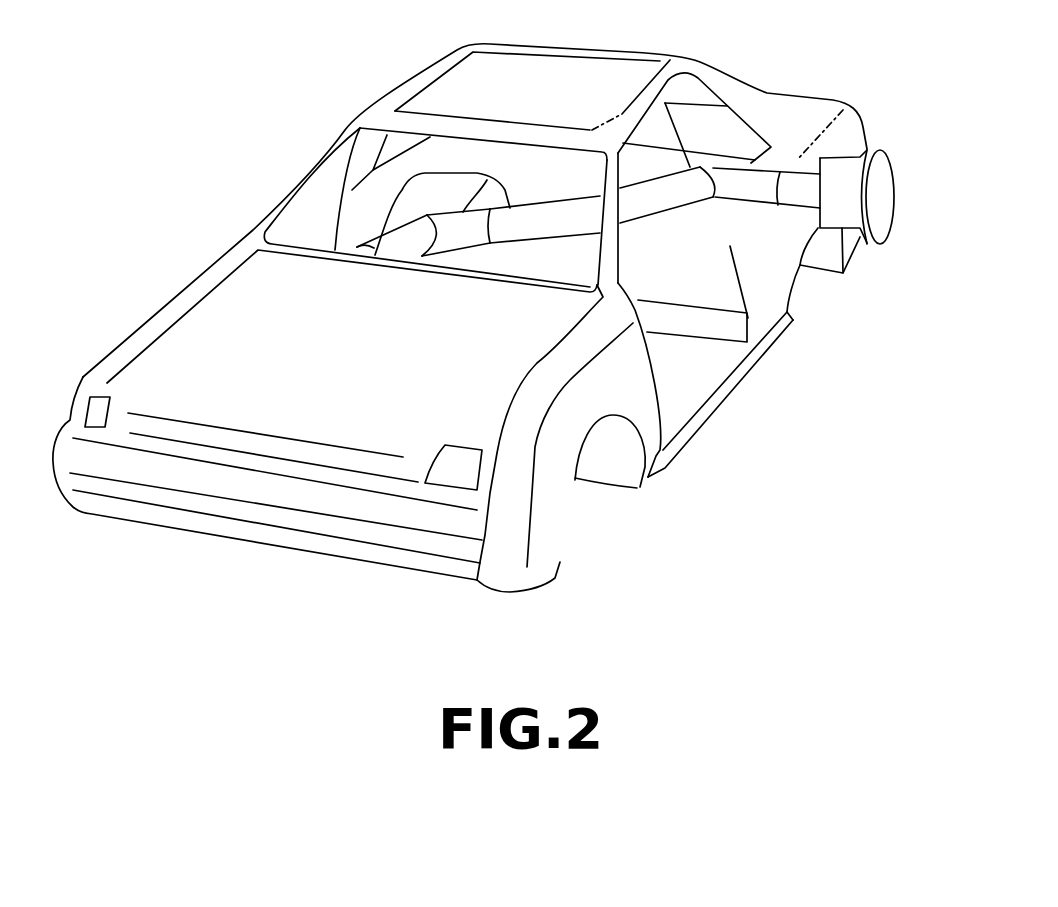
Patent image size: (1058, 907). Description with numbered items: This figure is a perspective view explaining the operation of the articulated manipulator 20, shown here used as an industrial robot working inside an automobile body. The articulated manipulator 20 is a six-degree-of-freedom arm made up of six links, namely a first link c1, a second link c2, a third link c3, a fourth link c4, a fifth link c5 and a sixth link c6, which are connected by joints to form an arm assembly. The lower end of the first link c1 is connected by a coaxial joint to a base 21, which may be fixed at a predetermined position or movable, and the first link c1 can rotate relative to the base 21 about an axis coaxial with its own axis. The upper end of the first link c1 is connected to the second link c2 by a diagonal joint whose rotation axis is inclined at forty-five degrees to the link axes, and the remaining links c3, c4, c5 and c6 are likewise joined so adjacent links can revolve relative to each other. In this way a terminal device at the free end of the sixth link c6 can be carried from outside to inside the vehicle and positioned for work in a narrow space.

The articulated manipulator 20 is at (724, 139).
The base 21 is at (830, 210).
The first link c1 is at (733, 189).
The second link c2 is at (693, 189).
The third link c3 is at (633, 207).
The fourth link c4 is at (537, 218).
The fifth link c5 is at (463, 238).
The sixth link c6 is at (402, 247).